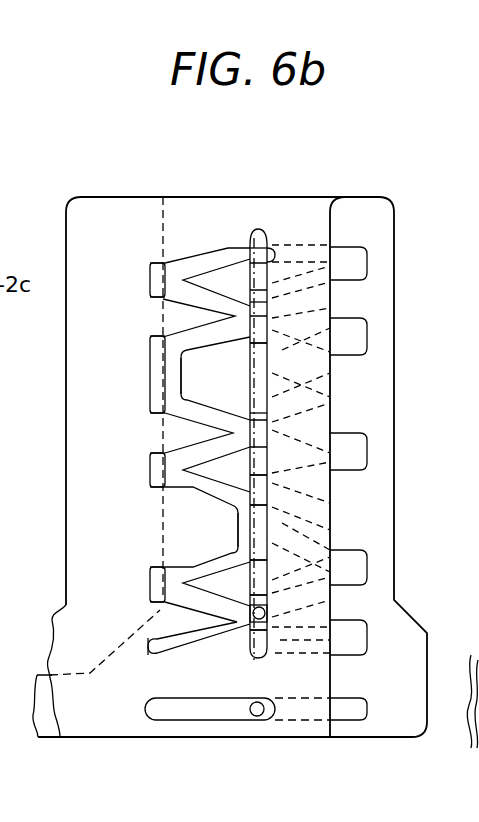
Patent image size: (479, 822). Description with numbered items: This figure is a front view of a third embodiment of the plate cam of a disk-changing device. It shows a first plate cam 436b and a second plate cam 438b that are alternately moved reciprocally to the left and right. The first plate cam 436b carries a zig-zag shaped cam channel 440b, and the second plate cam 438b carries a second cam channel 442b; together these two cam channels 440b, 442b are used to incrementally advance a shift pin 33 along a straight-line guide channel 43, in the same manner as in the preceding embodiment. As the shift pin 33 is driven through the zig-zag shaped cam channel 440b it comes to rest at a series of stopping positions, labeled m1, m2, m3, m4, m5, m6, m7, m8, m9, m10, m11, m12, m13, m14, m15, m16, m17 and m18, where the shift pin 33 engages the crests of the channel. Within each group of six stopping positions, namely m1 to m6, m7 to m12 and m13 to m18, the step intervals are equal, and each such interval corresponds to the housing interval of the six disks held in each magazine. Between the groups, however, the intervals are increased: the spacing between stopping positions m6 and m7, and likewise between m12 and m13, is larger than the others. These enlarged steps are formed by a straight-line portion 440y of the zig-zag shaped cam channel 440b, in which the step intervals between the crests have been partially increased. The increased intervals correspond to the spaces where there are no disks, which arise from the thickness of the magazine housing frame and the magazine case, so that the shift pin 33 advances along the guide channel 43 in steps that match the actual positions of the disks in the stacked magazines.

The first plate cam 436b is at (122, 213).
The zig-zag shaped cam channel 440b is at (233, 240).
The straight-line guide channel 43 is at (262, 232).
The second plate cam 438b is at (350, 206).
The cam channel 442b is at (367, 268).
The straight-line portion 440y is at (150, 373).
The shift pin 33 is at (257, 617).
The stopping position m1 is at (153, 648).
The stopping position m2 is at (275, 640).
The stopping position m3 is at (272, 598).
The stopping position m4 is at (150, 580).
The stopping position m5 is at (152, 569).
The stopping position m6 is at (272, 560).
The stopping position m7 is at (282, 489).
The stopping position m8 is at (152, 484).
The stopping position m9 is at (152, 458).
The stopping position m10 is at (270, 460).
The stopping position m11 is at (285, 417).
The stopping position m12 is at (152, 404).
The stopping position m13 is at (152, 345).
The stopping position m14 is at (262, 337).
The stopping position m15 is at (285, 306).
The stopping position m16 is at (152, 296).
The stopping position m17 is at (152, 268).
The stopping position m18 is at (272, 250).